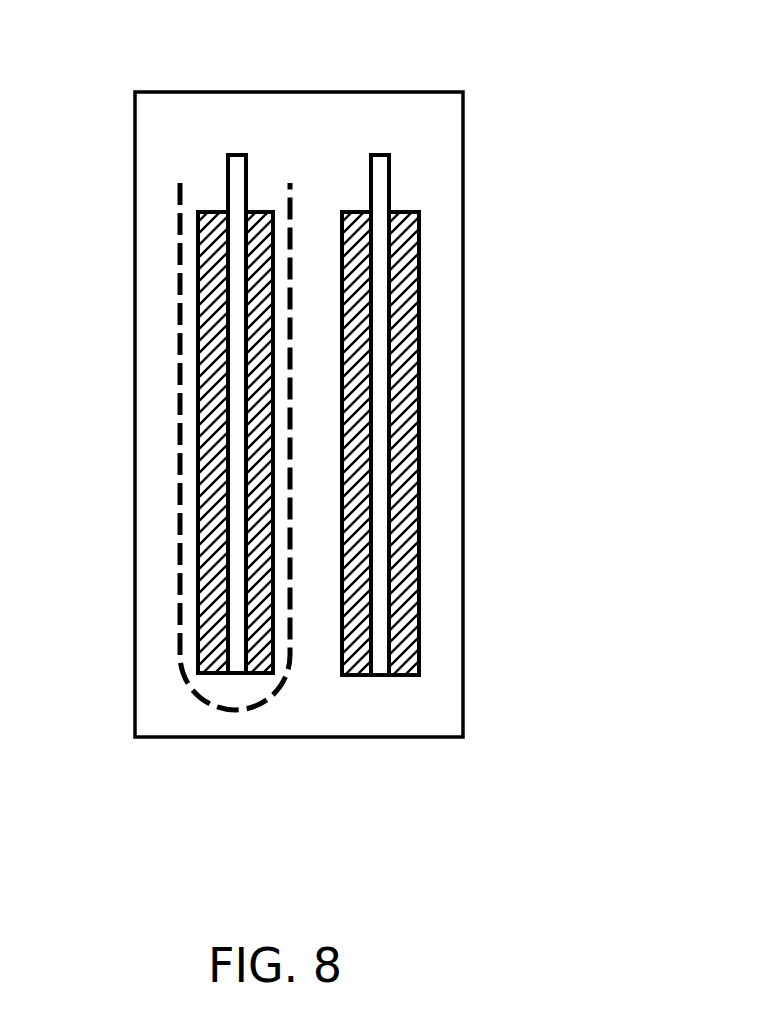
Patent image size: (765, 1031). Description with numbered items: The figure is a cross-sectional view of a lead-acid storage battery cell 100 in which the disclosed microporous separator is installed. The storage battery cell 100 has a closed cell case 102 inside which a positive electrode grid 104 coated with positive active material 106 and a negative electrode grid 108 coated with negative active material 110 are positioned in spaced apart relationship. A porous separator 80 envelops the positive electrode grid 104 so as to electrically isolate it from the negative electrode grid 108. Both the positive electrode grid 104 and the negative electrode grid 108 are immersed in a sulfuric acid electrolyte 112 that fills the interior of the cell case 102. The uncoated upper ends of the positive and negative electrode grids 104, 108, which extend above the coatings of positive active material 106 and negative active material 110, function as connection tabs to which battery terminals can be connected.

The lead-acid storage battery cell 100 is at (495, 740).
The closed cell case 102 is at (463, 182).
The porous separator 80 is at (200, 705).
The positive electrode grid 104 is at (237, 155).
The positive active material 106 is at (275, 650).
The negative electrode grid 108 is at (389, 155).
The negative active material 110 is at (420, 563).
The sulfuric acid electrolyte 112 is at (445, 360).